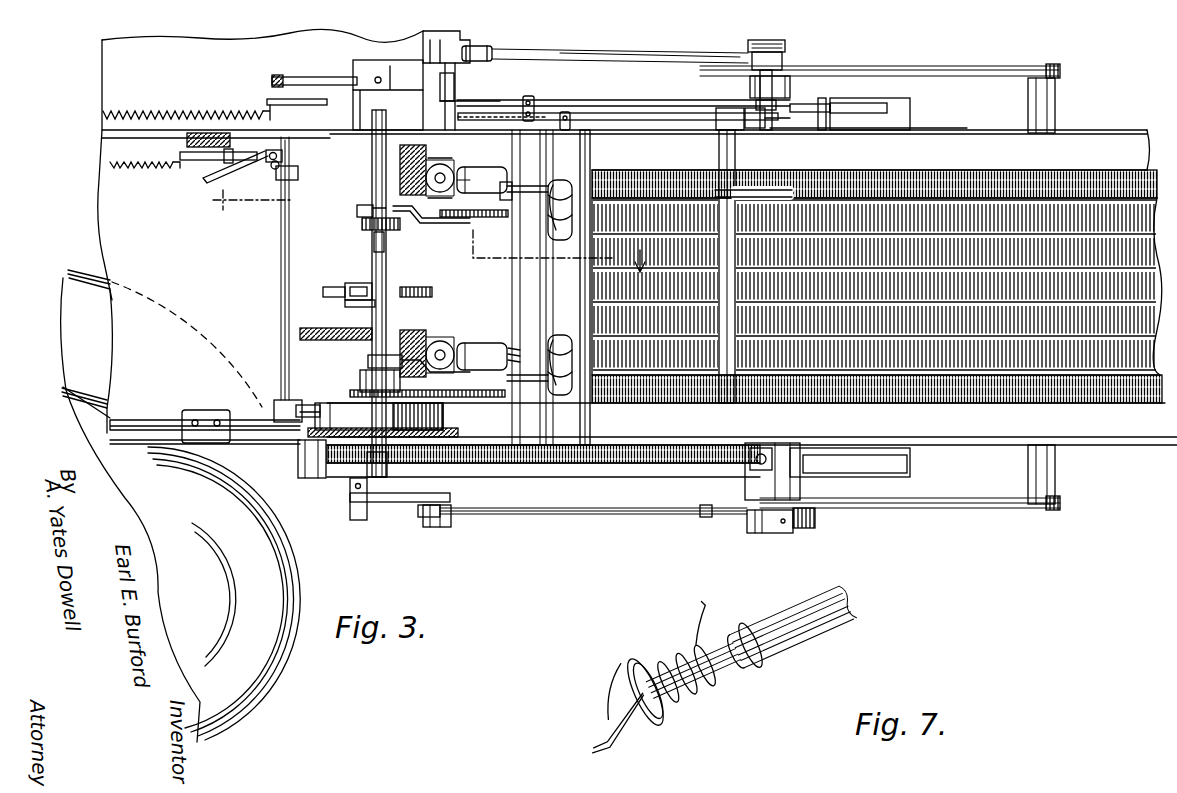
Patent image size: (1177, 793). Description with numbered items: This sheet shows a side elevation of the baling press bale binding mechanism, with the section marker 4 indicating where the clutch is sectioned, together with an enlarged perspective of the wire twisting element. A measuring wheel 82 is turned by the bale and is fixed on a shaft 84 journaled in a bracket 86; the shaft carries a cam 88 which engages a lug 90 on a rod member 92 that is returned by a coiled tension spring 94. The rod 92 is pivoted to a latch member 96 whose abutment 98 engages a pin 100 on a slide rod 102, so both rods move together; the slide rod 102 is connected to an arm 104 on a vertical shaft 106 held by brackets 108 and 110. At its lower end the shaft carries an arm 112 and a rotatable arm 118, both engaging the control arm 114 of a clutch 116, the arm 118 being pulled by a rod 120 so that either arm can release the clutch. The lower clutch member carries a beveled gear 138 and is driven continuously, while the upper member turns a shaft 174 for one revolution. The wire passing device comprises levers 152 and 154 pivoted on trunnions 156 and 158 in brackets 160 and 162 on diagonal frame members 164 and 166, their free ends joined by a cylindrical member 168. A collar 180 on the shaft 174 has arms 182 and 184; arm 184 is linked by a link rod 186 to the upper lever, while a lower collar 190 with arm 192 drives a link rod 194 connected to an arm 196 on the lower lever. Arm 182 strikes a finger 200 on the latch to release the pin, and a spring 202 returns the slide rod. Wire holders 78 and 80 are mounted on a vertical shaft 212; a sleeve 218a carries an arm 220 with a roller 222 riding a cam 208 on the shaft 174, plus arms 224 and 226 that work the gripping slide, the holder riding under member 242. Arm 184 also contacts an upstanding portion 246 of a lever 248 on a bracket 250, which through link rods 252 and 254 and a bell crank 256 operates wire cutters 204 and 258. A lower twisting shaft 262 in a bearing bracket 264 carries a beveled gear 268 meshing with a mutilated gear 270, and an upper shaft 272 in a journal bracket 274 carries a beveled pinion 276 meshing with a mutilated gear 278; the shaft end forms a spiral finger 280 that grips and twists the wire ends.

In FIG. 3, the section line 4 is at (427, 243).
In FIG. 3, the wire holder 78 is at (349, 216).
In FIG. 3, the wire holder 80 is at (352, 388).
In FIG. 3, the measuring wheel 82 is at (690, 170).
In FIG. 3, the shaft 84 is at (733, 310).
In FIG. 3, the bracket 86 is at (718, 134).
In FIG. 3, the cam 88 is at (716, 118).
In FIG. 3, the lug or stop 90 is at (760, 128).
In FIG. 3, the rod member 92 is at (662, 100).
In FIG. 3, the coiled tension spring 94 is at (178, 111).
In FIG. 3, the latch member 96 is at (206, 180).
In FIG. 3, the abutment 98 is at (266, 165).
In FIG. 3, the lug or pin 100 is at (265, 178).
In FIG. 3, the slide rod 102 is at (180, 156).
In FIG. 3, the arm 104 is at (306, 177).
In FIG. 3, the vertical shaft 106 is at (281, 258).
In FIG. 3, the bracket 108 is at (187, 140).
In FIG. 3, the bracket 110 is at (222, 445).
In FIG. 3, the arm 112 is at (277, 405).
In FIG. 3, the clutch control arm 114 is at (310, 458).
In FIG. 3, the clutch 116 is at (445, 420).
In FIG. 3, the arm 118 is at (270, 412).
In FIG. 3, the shaft or rod 120 is at (158, 418).
In FIG. 3, the beveled gear 138 is at (447, 440).
In FIG. 3, the lever 152 is at (985, 68).
In FIG. 3, the lever 154 is at (992, 510).
In FIG. 3, the axle or trunnion 156 is at (768, 50).
In FIG. 3, the axle or trunnion 158 is at (767, 533).
In FIG. 3, the bracket 160 is at (790, 90).
In FIG. 3, the bracket 162 is at (758, 468).
In FIG. 3, the frame member 164 is at (912, 112).
In FIG. 3, the frame member 166 is at (912, 466).
In FIG. 3, the vertical cylindrical member 168 is at (1057, 472).
In FIG. 3, the shaft 174 is at (372, 182).
In FIG. 3, the collar 180 is at (360, 62).
In FIG. 3, the arm 182 is at (290, 76).
In FIG. 3, the arm 184 is at (410, 60).
In FIG. 3, the link rod 186 is at (628, 44).
In FIG. 3, the collar 190 is at (356, 500).
In FIG. 3, the arm 192 is at (417, 503).
In FIG. 3, the link rod 194 is at (612, 517).
In FIG. 3, the arm 196 is at (815, 515).
In FIG. 3, the finger 200 is at (300, 100).
In FIG. 3, the coil tension spring 202 is at (176, 175).
In FIG. 3, the wire cutter 204 is at (575, 236).
In FIG. 3, the cam 208 is at (430, 284).
In FIG. 3, the vertical shaft 212 is at (362, 224).
In FIG. 3, the sleeve 218a is at (374, 242).
In FIG. 3, the arm 220 is at (352, 282).
In FIG. 3, the roller 222 is at (350, 300).
In FIG. 3, the arm 224 is at (418, 226).
In FIG. 3, the arm 226 is at (368, 360).
In FIG. 3, the member 242 is at (406, 413).
In FIG. 3, the upstanding portion 246 is at (478, 40).
In FIG. 3, the lever 248 is at (456, 84).
In FIG. 3, the bracket 250 is at (490, 116).
In FIG. 3, the link rod 252 is at (532, 96).
In FIG. 3, the link rod 254 is at (591, 150).
In FIG. 3, the bell crank 256 is at (565, 110).
In FIG. 3, the wire cutter 258 is at (574, 345).
In FIG. 3, the rotatable shaft 262 is at (504, 342).
In FIG. 7, the rotatable shaft 262 is at (690, 636).
In FIG. 3, the bearing bracket 264 is at (478, 348).
In FIG. 7, the bearing bracket 264 is at (802, 654).
In FIG. 3, the beveled gear 268 is at (440, 335).
In FIG. 3, the mutilated beveled gear 270 is at (300, 333).
In FIG. 3, the upper shaft 272 is at (503, 200).
In FIG. 3, the journal bracket 274 is at (472, 173).
In FIG. 3, the beveled pinion 276 is at (456, 218).
In FIG. 3, the mutilated gear 278 is at (427, 166).
In FIG. 7, the spiral finger or hook 280 is at (607, 682).